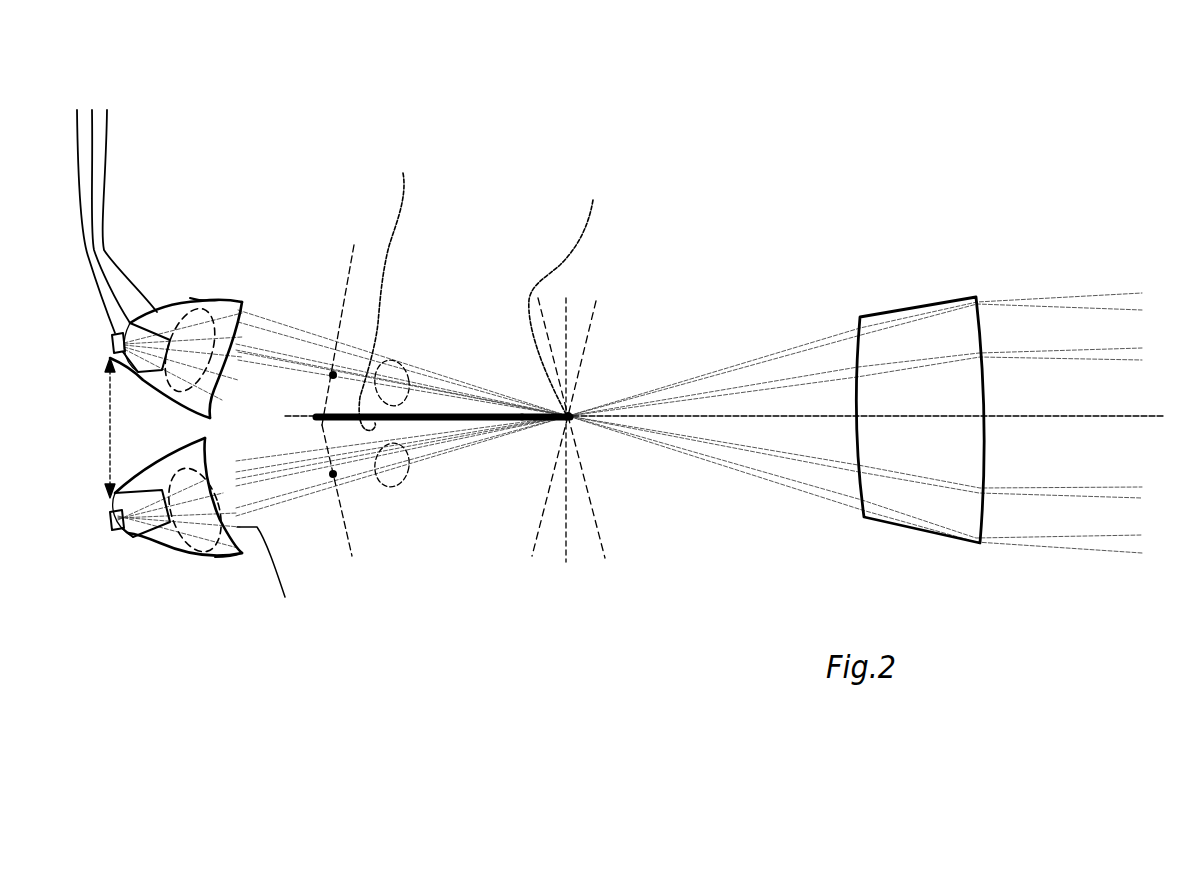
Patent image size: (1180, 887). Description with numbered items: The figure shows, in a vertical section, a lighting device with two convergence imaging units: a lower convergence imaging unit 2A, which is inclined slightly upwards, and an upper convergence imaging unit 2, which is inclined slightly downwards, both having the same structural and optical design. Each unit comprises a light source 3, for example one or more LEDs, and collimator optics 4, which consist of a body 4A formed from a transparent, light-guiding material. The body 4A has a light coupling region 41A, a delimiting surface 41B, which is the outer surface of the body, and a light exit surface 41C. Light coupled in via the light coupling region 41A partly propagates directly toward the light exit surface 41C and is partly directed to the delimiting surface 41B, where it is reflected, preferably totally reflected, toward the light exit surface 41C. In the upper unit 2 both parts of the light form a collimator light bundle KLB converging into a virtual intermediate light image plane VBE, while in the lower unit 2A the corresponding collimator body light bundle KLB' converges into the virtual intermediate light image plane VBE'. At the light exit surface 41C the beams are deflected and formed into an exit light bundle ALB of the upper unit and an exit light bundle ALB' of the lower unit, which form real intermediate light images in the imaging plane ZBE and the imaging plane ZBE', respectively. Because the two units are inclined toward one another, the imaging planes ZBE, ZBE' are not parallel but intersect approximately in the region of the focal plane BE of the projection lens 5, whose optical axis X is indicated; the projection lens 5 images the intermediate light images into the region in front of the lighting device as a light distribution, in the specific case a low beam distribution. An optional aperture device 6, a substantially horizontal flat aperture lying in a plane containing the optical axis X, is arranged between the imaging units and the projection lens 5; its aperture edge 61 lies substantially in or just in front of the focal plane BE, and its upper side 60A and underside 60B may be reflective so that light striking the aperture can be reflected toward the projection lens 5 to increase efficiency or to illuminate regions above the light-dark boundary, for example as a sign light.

The convergence imaging unit 2 is at (240, 294).
The lower convergence imaging unit 2A is at (148, 563).
The light source 3 is at (108, 432).
The collimator optics 4 is at (210, 292).
The body 4A is at (200, 457).
The light coupling region 41A is at (112, 200).
The delimiting surface 41B is at (197, 294).
The light exit surface 41C is at (286, 581).
The projection lens 5 is at (918, 287).
The aperture device 6 is at (477, 404).
The upper side 60A is at (522, 414).
The underside 60B is at (398, 287).
The aperture edge 61 is at (574, 289).
The collimator light bundle KLB is at (174, 323).
The collimator body light bundle KLB' is at (192, 542).
The virtual intermediate light image plane VBE is at (351, 320).
The virtual intermediate light image plane VBE' is at (354, 505).
The exit light bundle ALB is at (412, 362).
The exit light bundle ALB' is at (415, 487).
The focal plane BE is at (566, 447).
The imaging plane ZBE is at (613, 336).
The imaging plane ZBE' is at (618, 489).
The optical axis X is at (1087, 414).